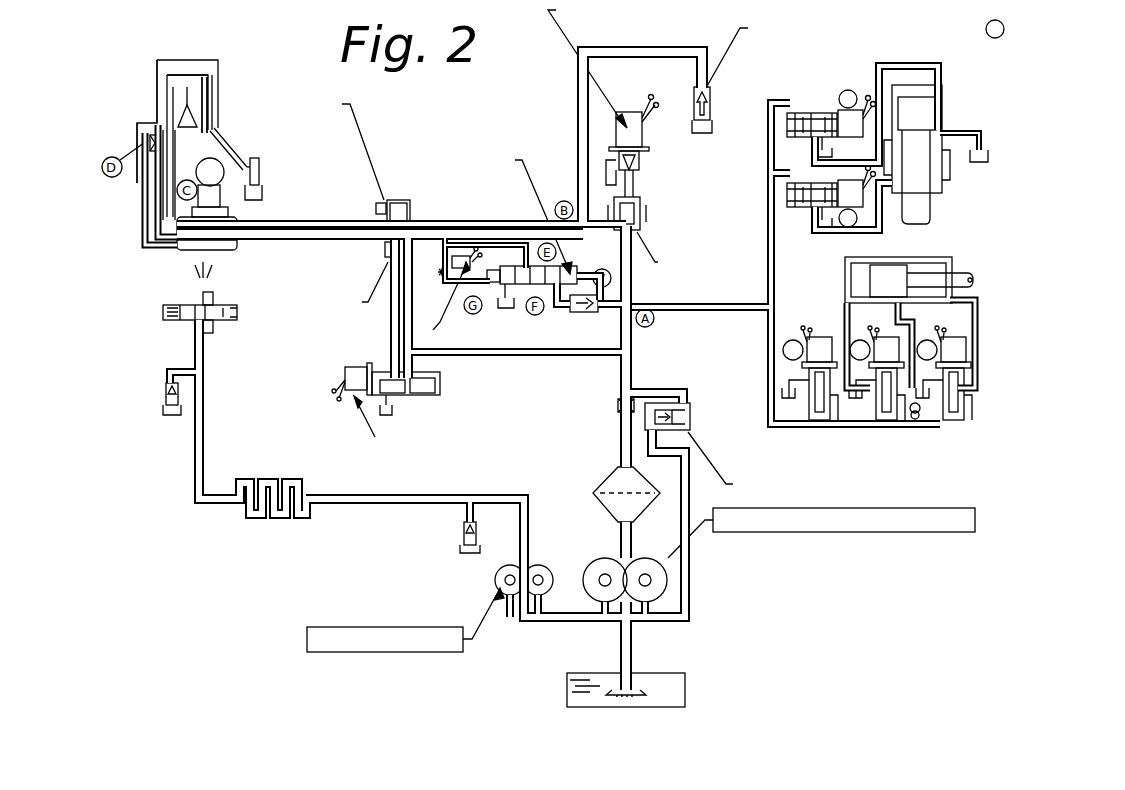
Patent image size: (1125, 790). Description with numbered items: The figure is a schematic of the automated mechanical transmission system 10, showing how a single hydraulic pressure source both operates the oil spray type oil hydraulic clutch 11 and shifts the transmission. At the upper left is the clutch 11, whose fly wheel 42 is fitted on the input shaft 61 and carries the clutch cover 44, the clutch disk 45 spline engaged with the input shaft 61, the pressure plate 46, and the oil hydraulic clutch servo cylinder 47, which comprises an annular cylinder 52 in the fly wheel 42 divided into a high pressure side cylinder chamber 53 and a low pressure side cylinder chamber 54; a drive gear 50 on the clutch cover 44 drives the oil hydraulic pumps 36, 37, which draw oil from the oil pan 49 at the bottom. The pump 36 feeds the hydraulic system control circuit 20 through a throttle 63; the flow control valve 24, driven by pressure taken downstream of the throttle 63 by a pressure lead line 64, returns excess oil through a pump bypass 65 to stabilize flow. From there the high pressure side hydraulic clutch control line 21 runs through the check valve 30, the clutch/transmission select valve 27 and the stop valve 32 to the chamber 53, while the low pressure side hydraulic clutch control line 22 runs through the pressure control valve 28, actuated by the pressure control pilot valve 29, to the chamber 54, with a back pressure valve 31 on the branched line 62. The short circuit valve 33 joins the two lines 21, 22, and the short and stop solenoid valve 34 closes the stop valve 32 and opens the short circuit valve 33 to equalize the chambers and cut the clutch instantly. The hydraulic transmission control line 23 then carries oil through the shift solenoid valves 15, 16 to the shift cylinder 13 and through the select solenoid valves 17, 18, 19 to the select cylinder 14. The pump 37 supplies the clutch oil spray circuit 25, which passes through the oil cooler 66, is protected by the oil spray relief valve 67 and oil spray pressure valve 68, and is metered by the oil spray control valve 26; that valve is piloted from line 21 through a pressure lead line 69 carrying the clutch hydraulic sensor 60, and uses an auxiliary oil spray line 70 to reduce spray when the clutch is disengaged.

The automated mechanical transmission system 10 is at (534, 59).
The oil hydraulic clutch 11 is at (216, 58).
The shift cylinder 13 is at (944, 78).
The select cylinder 14 is at (958, 265).
The shift solenoid valve 15 is at (830, 114).
The shift solenoid valve 16 is at (822, 184).
The select solenoid valve 17 is at (828, 390).
The select solenoid valve 18 is at (885, 394).
The select solenoid valve 19 is at (962, 392).
The hydraulic system control circuit 20 is at (632, 368).
The high pressure side hydraulic clutch control line 21 is at (330, 242).
The low pressure side hydraulic clutch control line 22 is at (278, 220).
The hydraulic transmission control line 23 is at (770, 200).
The flow control valve 24 is at (690, 420).
The clutch oil spray circuit 25 is at (384, 493).
The oil spray control valve 26 is at (182, 320).
The clutch/transmission select valve 27 is at (612, 262).
The pressure control valve 28 is at (641, 212).
The pressure control pilot valve 29 is at (682, 146).
The check valve 30 is at (581, 322).
The back pressure valve 31 is at (712, 104).
The stop valve 32 is at (384, 246).
The short circuit valve 33 is at (374, 207).
The short and stop solenoid valve 34 is at (370, 367).
The oil hydraulic pump 36 is at (600, 560).
The oil hydraulic pump 37 is at (538, 566).
The fly wheel 42 is at (157, 93).
The clutch cover 44 is at (238, 157).
The clutch disk 45 is at (214, 125).
The pressure plate 46 is at (190, 82).
The oil hydraulic clutch servo cylinder 47 is at (140, 133).
The oil pan 49 is at (684, 681).
The drive gear 50 is at (259, 165).
The annular cylinder 52 is at (152, 133).
The high pressure side cylinder chamber 53 is at (148, 178).
The low pressure side cylinder chamber 54 is at (183, 128).
The clutch hydraulic sensor 60 is at (472, 269).
The input shaft 61 is at (233, 251).
The branched line 62 is at (578, 118).
The throttle 63 is at (618, 406).
The pressure lead line 64 is at (680, 394).
The pump bypass 65 is at (702, 582).
The oil cooler 66 is at (263, 520).
The oil spray relief valve 67 is at (476, 534).
The oil spray pressure valve 68 is at (164, 406).
The pressure lead line 69 is at (211, 305).
The auxiliary oil spray line 70 is at (213, 333).